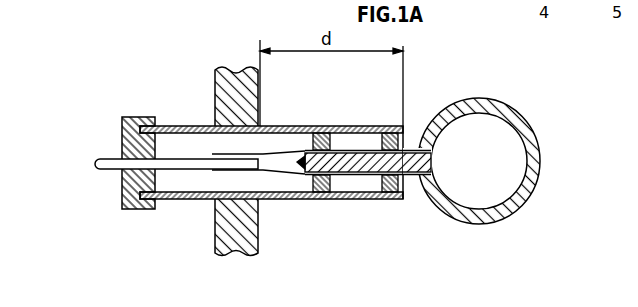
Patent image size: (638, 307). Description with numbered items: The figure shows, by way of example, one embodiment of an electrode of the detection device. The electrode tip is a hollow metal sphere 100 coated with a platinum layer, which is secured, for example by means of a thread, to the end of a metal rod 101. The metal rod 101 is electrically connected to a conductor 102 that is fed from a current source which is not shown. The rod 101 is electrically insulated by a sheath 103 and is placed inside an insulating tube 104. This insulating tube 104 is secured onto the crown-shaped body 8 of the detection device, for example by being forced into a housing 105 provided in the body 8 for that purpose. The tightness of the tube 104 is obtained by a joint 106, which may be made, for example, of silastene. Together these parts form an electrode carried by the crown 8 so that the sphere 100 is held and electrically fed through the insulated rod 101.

The body 8 is at (218, 225).
The hollow metal sphere 100 is at (518, 203).
The metal rod 101 is at (362, 163).
The conductor 102 is at (180, 159).
The sheath 103 is at (268, 172).
The insulating tube 104 is at (328, 189).
The housing 105 is at (253, 112).
The joint 106 is at (126, 117).